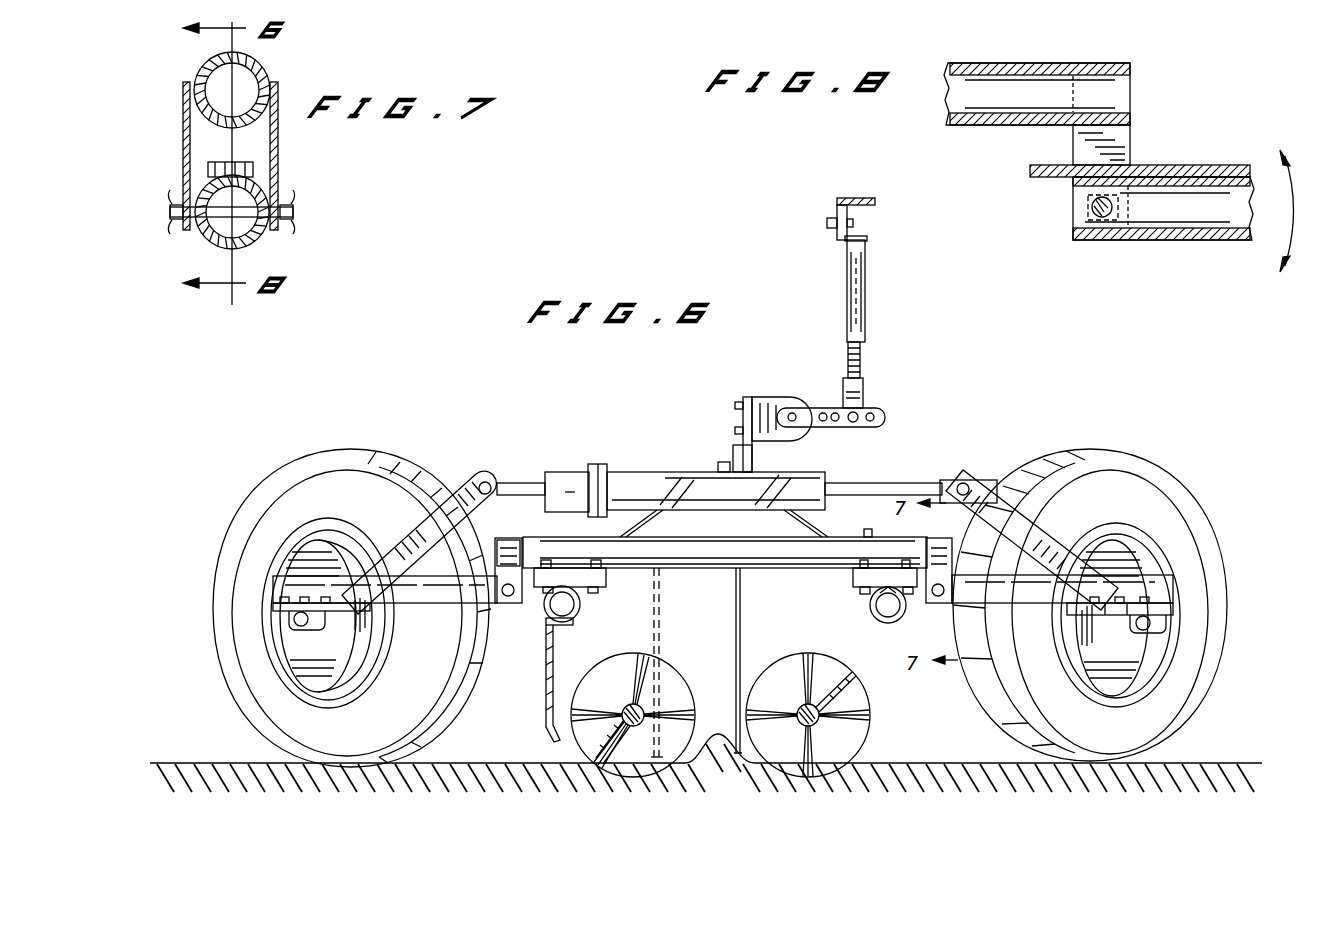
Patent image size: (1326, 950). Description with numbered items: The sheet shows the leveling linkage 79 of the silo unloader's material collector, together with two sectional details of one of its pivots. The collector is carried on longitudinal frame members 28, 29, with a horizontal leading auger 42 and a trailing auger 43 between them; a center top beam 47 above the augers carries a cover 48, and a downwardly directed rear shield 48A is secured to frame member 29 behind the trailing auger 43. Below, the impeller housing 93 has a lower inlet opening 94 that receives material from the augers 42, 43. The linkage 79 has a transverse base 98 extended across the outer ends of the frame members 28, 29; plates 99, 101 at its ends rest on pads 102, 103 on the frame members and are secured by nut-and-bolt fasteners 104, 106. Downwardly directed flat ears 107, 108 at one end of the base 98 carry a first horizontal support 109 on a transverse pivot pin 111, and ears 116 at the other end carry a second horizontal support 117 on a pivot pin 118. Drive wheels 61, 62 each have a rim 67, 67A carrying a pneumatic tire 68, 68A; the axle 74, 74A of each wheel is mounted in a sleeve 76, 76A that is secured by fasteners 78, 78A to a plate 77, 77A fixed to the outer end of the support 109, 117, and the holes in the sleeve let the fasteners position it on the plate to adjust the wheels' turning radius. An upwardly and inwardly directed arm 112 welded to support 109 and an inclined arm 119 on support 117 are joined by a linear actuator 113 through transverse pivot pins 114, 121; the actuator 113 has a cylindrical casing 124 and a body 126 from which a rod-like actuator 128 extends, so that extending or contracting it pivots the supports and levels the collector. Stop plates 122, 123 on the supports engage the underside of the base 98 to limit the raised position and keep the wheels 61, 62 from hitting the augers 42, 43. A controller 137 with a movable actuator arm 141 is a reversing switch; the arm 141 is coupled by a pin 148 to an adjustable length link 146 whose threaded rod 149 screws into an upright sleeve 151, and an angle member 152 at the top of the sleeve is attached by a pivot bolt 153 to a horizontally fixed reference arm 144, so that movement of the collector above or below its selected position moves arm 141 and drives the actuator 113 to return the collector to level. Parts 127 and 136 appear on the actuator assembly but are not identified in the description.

In FIG. 6, the longitudinal frame member 28 is at (870, 612).
In FIG. 6, the longitudinal frame member 29 is at (545, 624).
In FIG. 6, the leading auger 42 is at (860, 736).
In FIG. 6, the trailing auger 43 is at (666, 690).
In FIG. 6, the center top beam 47 is at (718, 458).
In FIG. 6, the cover 48 is at (644, 523).
In FIG. 6, the rear shield 48A is at (546, 668).
In FIG. 6, the drive wheel 61 is at (1202, 483).
In FIG. 6, the drive wheel 62 is at (252, 462).
In FIG. 6, the rim 67 is at (1130, 690).
In FIG. 6, the rim 67A is at (302, 686).
In FIG. 6, the pneumatic tire 68 is at (1108, 470).
In FIG. 6, the pneumatic tire 68A is at (248, 528).
In FIG. 6, the axle 74 is at (1151, 623).
In FIG. 6, the axle 74A is at (297, 625).
In FIG. 6, the sleeve 76 is at (1162, 640).
In FIG. 6, the sleeve 76A is at (300, 636).
In FIG. 6, the plate 77 is at (1175, 604).
In FIG. 6, the plate 77A is at (273, 606).
In FIG. 6, the fasteners 78 is at (1115, 600).
In FIG. 6, the fasteners 78A is at (285, 585).
In FIG. 6, the leveling linkage 79 is at (994, 398).
In FIG. 6, the housing 93 is at (740, 635).
In FIG. 6, the inlet opening 94 is at (681, 662).
In FIG. 7, the transverse base 98 is at (200, 74).
In FIG. 8, the transverse base 98 is at (995, 125).
In FIG. 6, the transverse base 98 is at (718, 556).
In FIG. 6, the plate 99 is at (605, 580).
In FIG. 6, the plate 101 is at (852, 574).
In FIG. 6, the pad 102 is at (580, 606).
In FIG. 6, the pad 103 is at (862, 590).
In FIG. 6, the fastener 104 is at (600, 542).
In FIG. 6, the fastener 106 is at (880, 545).
In FIG. 7, the flat ear 107 is at (188, 140).
In FIG. 8, the flat ear 107 is at (1130, 150).
In FIG. 6, the flat ear 107 is at (947, 545).
In FIG. 7, the flat ear 108 is at (279, 163).
In FIG. 7, the first horizontal support 109 is at (215, 240).
In FIG. 8, the first horizontal support 109 is at (1170, 240).
In FIG. 6, the first horizontal support 109 is at (1024, 603).
In FIG. 7, the transverse pivot pin 111 is at (293, 211).
In FIG. 8, the transverse pivot pin 111 is at (1102, 217).
In FIG. 6, the transverse pivot pin 111 is at (940, 606).
In FIG. 6, the arm 112 is at (1030, 540).
In FIG. 6, the linear actuator 113 is at (629, 467).
In FIG. 6, the transverse pivot pin 114 is at (994, 480).
In FIG. 6, the ears 116 is at (510, 545).
In FIG. 6, the second horizontal support 117 is at (385, 632).
In FIG. 6, the transverse pivot pin 118 is at (498, 552).
In FIG. 6, the inclined arm 119 is at (405, 540).
In FIG. 6, the transverse pivot pin 121 is at (486, 482).
In FIG. 7, the stop plate 122 is at (215, 168).
In FIG. 8, the stop plate 122 is at (1040, 177).
In FIG. 6, the stop plate 122 is at (910, 620).
In FIG. 6, the stop plate 123 is at (520, 604).
In FIG. 6, the cylindrical casing 124 is at (792, 478).
In FIG. 6, the body 126 is at (568, 472).
In FIG. 6, the rod 127 is at (524, 485).
In FIG. 6, the rod-like actuator 128 is at (906, 484).
In FIG. 6, the ring 136 is at (597, 464).
In FIG. 6, the controller 137 is at (770, 396).
In FIG. 6, the actuator arm 141 is at (838, 408).
In FIG. 6, the reference arm 144 is at (868, 198).
In FIG. 6, the adjustable length link 146 is at (840, 297).
In FIG. 6, the pin 148 is at (857, 424).
In FIG. 6, the threaded rod 149 is at (862, 356).
In FIG. 6, the upright sleeve 151 is at (866, 302).
In FIG. 6, the angle member 152 is at (868, 240).
In FIG. 6, the pivot bolt 153 is at (827, 223).